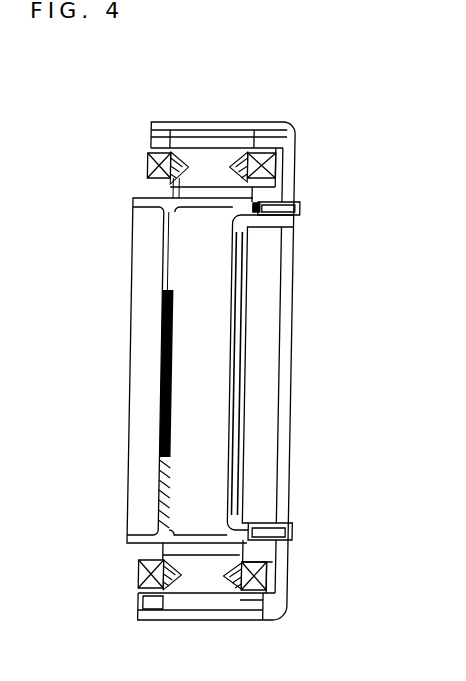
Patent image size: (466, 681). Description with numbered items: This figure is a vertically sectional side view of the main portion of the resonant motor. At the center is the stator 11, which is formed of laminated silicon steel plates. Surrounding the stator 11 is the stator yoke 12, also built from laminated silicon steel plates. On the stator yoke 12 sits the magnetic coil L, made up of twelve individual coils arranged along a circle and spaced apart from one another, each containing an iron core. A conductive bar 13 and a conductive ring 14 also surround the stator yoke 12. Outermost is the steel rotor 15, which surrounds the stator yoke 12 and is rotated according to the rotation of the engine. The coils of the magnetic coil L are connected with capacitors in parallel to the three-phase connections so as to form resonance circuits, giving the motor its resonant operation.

The stator 11 is at (129, 255).
The stator yoke 12 is at (191, 155).
The conductive bar 13 is at (213, 140).
The conductive ring 14 is at (148, 137).
The steel rotor 15 is at (248, 125).
The magnetic coil L is at (148, 167).